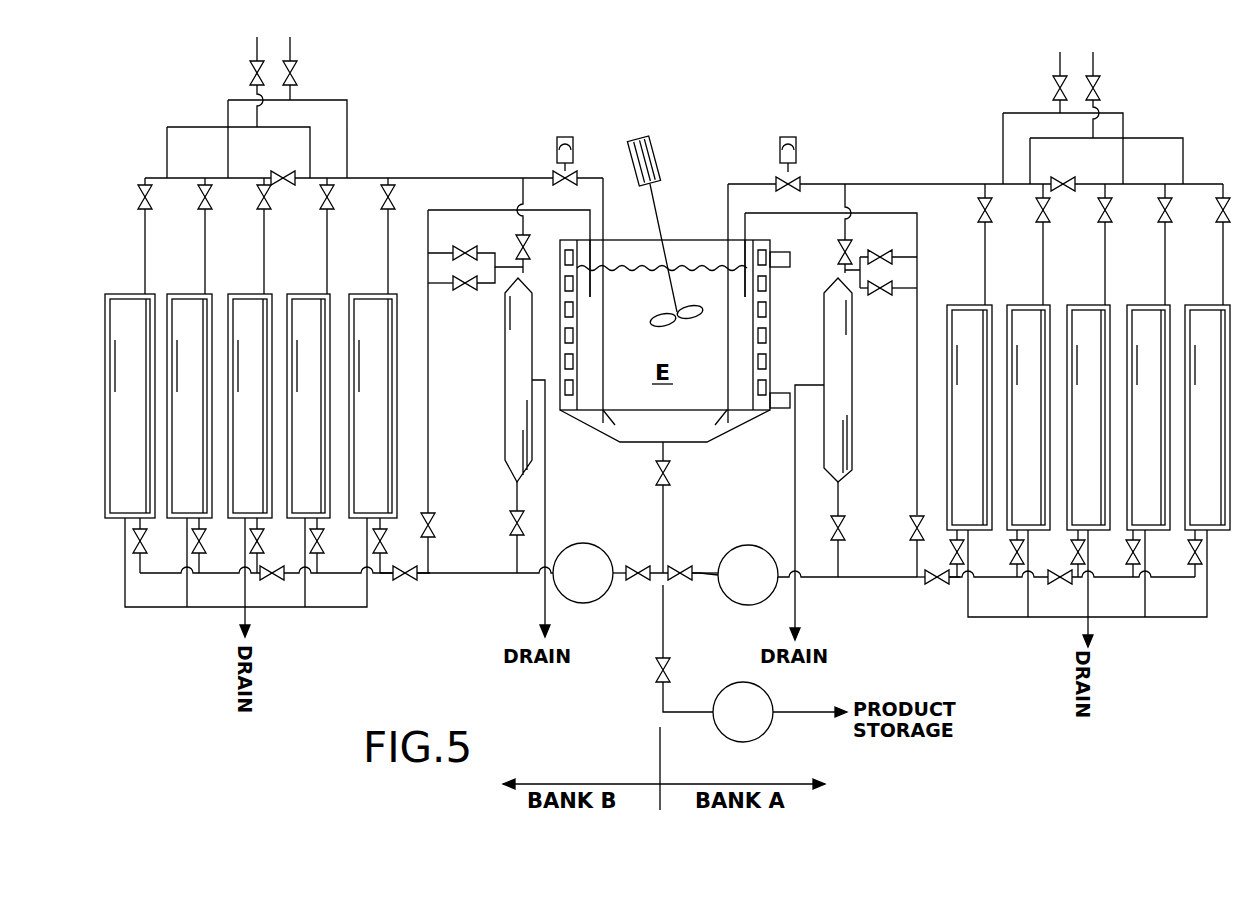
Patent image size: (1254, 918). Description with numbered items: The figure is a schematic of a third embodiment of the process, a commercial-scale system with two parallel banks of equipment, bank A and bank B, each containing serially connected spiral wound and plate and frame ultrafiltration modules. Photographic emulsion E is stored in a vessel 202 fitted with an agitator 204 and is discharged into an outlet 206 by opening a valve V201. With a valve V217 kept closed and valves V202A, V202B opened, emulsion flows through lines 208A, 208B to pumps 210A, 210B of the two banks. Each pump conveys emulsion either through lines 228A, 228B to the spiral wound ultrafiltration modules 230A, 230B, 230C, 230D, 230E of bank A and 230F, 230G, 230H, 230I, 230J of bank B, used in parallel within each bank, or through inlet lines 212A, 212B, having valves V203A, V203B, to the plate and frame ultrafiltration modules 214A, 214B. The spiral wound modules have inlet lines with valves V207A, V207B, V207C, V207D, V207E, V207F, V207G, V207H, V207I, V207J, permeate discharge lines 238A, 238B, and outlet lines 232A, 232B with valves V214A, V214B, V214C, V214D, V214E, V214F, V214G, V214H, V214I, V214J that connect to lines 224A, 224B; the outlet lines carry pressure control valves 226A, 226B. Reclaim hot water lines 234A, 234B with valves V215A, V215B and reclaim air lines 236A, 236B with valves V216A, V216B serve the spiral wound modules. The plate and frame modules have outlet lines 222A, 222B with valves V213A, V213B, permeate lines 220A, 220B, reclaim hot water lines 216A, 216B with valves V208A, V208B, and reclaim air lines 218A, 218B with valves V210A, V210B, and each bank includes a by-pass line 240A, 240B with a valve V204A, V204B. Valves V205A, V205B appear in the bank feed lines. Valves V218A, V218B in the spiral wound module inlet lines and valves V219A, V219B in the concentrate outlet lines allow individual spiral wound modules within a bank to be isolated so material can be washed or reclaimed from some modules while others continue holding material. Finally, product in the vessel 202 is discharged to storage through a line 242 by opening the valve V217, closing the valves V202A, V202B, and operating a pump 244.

The vessel 202 is at (728, 425).
The agitator 204 is at (658, 213).
The outlet 206 is at (658, 447).
The valve V201 is at (670, 477).
The valve V217 is at (670, 670).
The line 242 is at (661, 645).
The pump 244 is at (764, 731).
The line 208A is at (702, 578).
The line 208B is at (619, 578).
The pump 210A is at (736, 603).
The pump 210B is at (585, 604).
The valve V202A is at (686, 564).
The valve V202B is at (642, 564).
The inlet line 212A is at (826, 581).
The inlet line 212B is at (526, 578).
The plate and frame ultrafiltration module 214A is at (846, 475).
The plate and frame ultrafiltration module 214B is at (505, 470).
The reclaim hot water line 216A is at (919, 213).
The reclaim hot water line 216B is at (432, 212).
The reclaim air line 218A is at (896, 291).
The reclaim air line 218B is at (452, 286).
The permeate line 220A is at (795, 512).
The permeate line 220B is at (547, 510).
The outlet line 222A is at (846, 284).
The outlet line 222B is at (523, 267).
The line 224A is at (733, 183).
The line 224B is at (598, 178).
The pressure control valve 226A is at (793, 137).
The pressure control valve 226B is at (562, 137).
The line 228A is at (922, 583).
The line 228B is at (398, 580).
The spiral wound ultrafiltration module 230A is at (969, 417).
The spiral wound ultrafiltration module 230B is at (1028, 417).
The spiral wound ultrafiltration module 230C is at (1088, 417).
The spiral wound ultrafiltration module 230D is at (1148, 417).
The spiral wound ultrafiltration module 230E is at (1207, 417).
The spiral wound ultrafiltration module 230F is at (373, 406).
The spiral wound ultrafiltration module 230G is at (308, 406).
The spiral wound ultrafiltration module 230H is at (250, 406).
The spiral wound ultrafiltration module 230I is at (189, 406).
The spiral wound ultrafiltration module 230J is at (130, 406).
The outlet line 232A is at (800, 181).
The outlet line 232B is at (557, 177).
The reclaim hot water line 234A is at (1097, 63).
The reclaim hot water line 234B is at (254, 46).
The reclaim air line 236A is at (1056, 60).
The reclaim air line 236B is at (294, 47).
The permeate discharge line 238A is at (1085, 628).
The permeate discharge line 238B is at (243, 618).
The by-pass line 240A is at (915, 436).
The by-pass line 240B is at (430, 433).
The valve V203A is at (862, 520).
The valve V203B is at (511, 520).
The valve V204A is at (910, 532).
The valve V204B is at (431, 538).
The valve V205A is at (940, 589).
The valve V205B is at (406, 586).
The valve V207A is at (960, 565).
The valve V207B is at (1018, 565).
The valve V207C is at (1080, 565).
The valve V207D is at (1134, 565).
The valve V207E is at (1195, 565).
The valve V207F is at (380, 556).
The valve V207G is at (318, 556).
The valve V207H is at (256, 556).
The valve V207I is at (200, 556).
The valve V207J is at (145, 556).
The valve V208A is at (879, 250).
The valve V208B is at (467, 246).
The valve V210A is at (864, 294).
The valve V210B is at (478, 289).
The valve V213A is at (839, 246).
The valve V213B is at (530, 246).
The valve V214A is at (978, 214).
The valve V214B is at (1036, 214).
The valve V214C is at (1098, 214).
The valve V214D is at (1158, 214).
The valve V214E is at (1216, 214).
The valve V214F is at (382, 194).
The valve V214G is at (321, 194).
The valve V214H is at (258, 194).
The valve V214I is at (199, 194).
The valve V214J is at (139, 194).
The valve V215A is at (1100, 95).
The valve V215B is at (251, 73).
The valve V216A is at (1053, 92).
The valve V216B is at (297, 78).
The valve V218A is at (1059, 590).
The valve V218B is at (273, 584).
The valve V219A is at (1057, 160).
The valve V219B is at (297, 158).